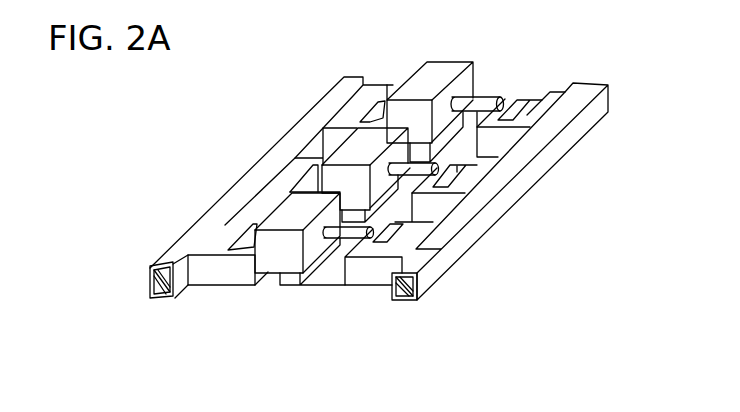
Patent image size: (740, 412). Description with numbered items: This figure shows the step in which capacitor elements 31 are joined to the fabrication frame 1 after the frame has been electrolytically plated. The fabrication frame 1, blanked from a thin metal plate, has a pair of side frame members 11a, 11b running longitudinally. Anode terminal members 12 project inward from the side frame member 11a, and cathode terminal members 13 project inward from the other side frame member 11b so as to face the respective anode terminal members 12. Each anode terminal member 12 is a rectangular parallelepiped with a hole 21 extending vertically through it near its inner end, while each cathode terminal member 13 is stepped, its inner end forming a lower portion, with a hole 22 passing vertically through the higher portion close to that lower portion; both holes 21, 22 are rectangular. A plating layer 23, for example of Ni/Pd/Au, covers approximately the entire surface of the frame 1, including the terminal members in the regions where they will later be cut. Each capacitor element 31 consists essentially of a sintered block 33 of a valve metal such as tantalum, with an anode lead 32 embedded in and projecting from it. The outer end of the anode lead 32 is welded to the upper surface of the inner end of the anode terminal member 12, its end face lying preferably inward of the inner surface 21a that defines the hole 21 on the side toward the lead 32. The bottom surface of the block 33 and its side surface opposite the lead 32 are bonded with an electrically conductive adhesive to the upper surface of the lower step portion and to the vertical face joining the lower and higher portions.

The fabrication frame 1 is at (575, 167).
The side frame member 11a is at (580, 131).
The side frame member 11b is at (278, 160).
The anode terminal member 12 is at (372, 262).
The cathode terminal member 13 is at (212, 247).
The hole 21 is at (525, 100).
The inner surface 21a is at (462, 165).
The hole 22 is at (370, 115).
The plating layer 23 is at (413, 301).
The capacitor element 31 is at (449, 57).
The anode lead 32 is at (482, 104).
The sintered block 33 is at (422, 82).